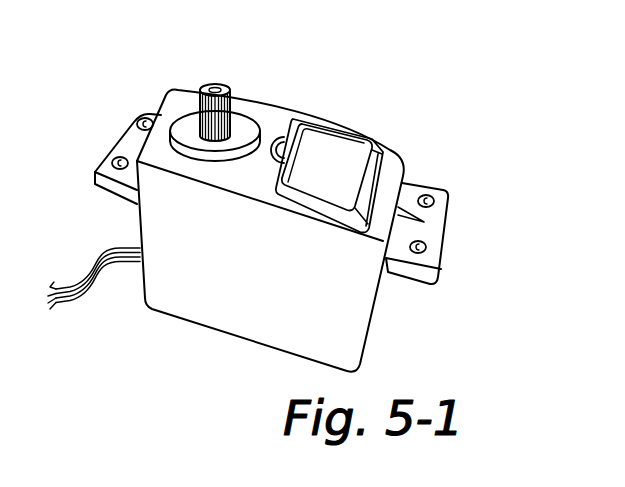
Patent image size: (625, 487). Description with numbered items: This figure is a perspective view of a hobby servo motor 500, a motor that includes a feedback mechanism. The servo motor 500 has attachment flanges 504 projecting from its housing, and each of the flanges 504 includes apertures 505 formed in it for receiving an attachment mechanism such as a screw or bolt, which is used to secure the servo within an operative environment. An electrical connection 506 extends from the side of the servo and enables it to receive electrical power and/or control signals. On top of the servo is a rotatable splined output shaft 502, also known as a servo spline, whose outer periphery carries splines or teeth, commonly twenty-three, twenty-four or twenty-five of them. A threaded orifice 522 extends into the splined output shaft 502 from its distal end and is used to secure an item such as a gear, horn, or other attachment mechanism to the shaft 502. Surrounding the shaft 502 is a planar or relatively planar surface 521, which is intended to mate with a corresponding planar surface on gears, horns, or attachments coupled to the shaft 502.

The hobby servo motor 500 is at (222, 358).
The splined output shaft 502 is at (195, 113).
The attachment flange 504 is at (110, 188).
The aperture 505 is at (116, 161).
The electrical connection 506 is at (80, 303).
The planar surface 521 is at (246, 127).
The threaded orifice 522 is at (216, 90).